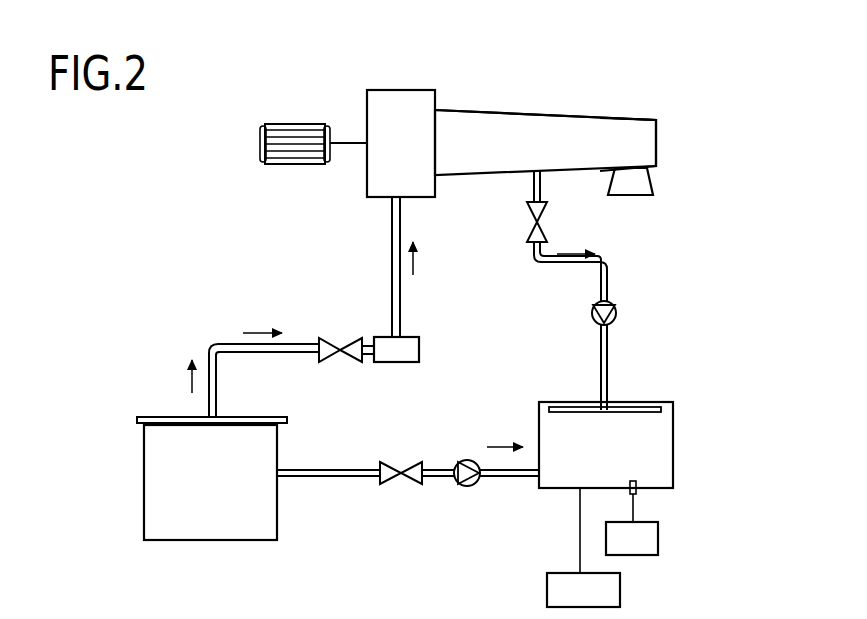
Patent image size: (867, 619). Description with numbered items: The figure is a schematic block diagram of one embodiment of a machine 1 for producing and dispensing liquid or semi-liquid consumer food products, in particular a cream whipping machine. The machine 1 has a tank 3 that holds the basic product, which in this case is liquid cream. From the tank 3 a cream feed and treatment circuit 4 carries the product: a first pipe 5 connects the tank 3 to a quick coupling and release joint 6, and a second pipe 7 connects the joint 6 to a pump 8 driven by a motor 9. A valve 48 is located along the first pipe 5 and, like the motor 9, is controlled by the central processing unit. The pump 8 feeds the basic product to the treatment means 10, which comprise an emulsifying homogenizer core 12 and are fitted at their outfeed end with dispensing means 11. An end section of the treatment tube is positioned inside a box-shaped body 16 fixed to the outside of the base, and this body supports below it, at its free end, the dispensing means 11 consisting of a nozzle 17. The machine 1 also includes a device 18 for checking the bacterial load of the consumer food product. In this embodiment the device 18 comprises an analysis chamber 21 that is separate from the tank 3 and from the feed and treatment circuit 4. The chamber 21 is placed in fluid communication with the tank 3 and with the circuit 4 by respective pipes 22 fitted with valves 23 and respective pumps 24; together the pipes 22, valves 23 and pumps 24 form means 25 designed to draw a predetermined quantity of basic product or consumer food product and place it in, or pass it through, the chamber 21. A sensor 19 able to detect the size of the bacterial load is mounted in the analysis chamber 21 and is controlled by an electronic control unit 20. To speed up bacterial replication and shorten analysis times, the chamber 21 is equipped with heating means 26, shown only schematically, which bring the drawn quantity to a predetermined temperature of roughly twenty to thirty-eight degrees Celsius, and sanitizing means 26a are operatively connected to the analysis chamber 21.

The machine 1 is at (715, 108).
The tank 3 is at (212, 478).
The cream feed and treatment circuit 4 is at (501, 103).
The first pipe 5 is at (208, 398).
The quick coupling and release joint 6 is at (406, 352).
The second pipe 7 is at (390, 212).
The pump 8 is at (401, 143).
The motor 9 is at (278, 133).
The treatment means 10 is at (458, 104).
The dispensing means 11 is at (657, 180).
The emulsifying homogenizer core 12 is at (612, 110).
The box-shaped body 16 is at (557, 112).
The nozzle 17 is at (640, 192).
The device for checking the bacterial load 18 is at (685, 347).
The sensor 19 is at (674, 460).
The electronic control unit 20 is at (632, 538).
The analysis chamber 21 is at (636, 480).
The pipes 22 is at (562, 265).
The valves 23 is at (523, 221).
The pumps 24 is at (616, 311).
The drawing means 25 is at (626, 266).
The heating means 26 is at (659, 404).
The sanitizing means 26a is at (583, 547).
The valve 48 is at (337, 340).